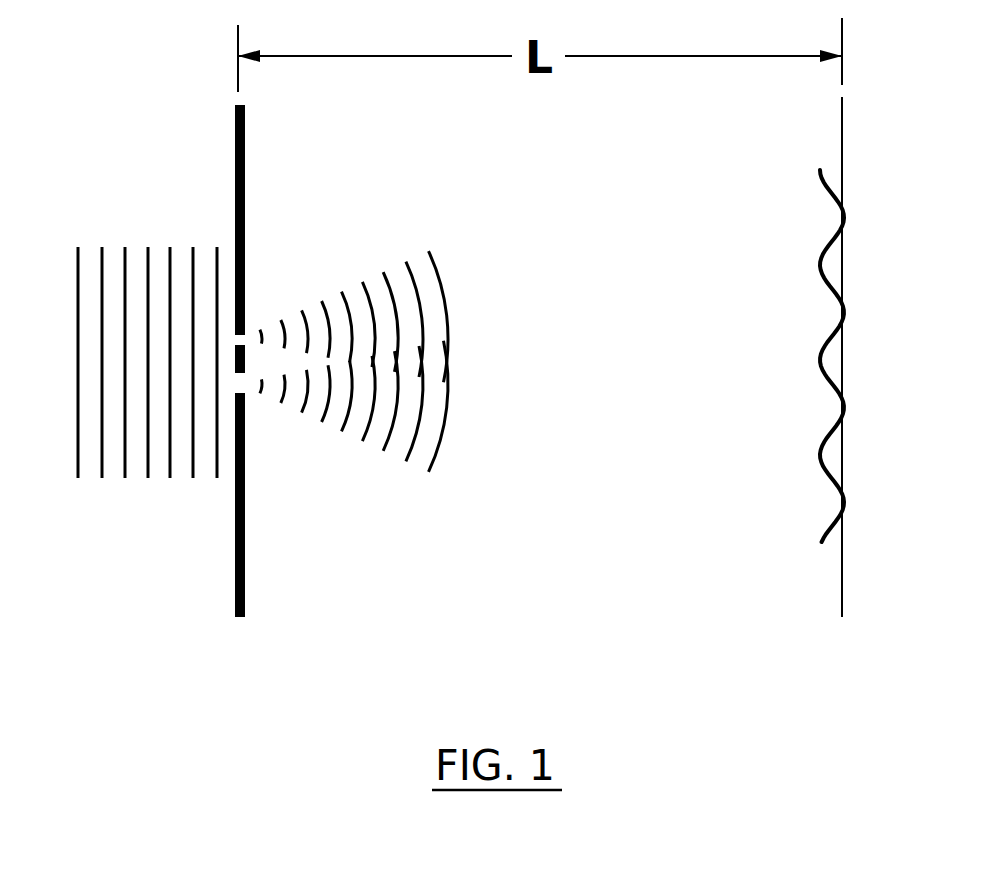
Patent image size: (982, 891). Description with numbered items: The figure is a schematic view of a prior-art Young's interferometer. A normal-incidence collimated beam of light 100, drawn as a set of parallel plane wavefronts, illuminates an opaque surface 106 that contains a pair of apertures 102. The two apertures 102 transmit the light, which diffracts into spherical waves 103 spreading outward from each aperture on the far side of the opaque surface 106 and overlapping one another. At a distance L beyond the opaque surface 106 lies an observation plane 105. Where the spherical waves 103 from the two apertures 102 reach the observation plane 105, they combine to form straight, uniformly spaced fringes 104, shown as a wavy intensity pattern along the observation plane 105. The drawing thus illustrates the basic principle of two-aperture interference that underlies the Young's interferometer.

The collimated beam of light 100 is at (128, 422).
The apertures 102 is at (240, 375).
The spherical waves 103 is at (409, 410).
The fringes 104 is at (718, 321).
The observation plane 105 is at (752, 396).
The opaque surface 106 is at (330, 385).